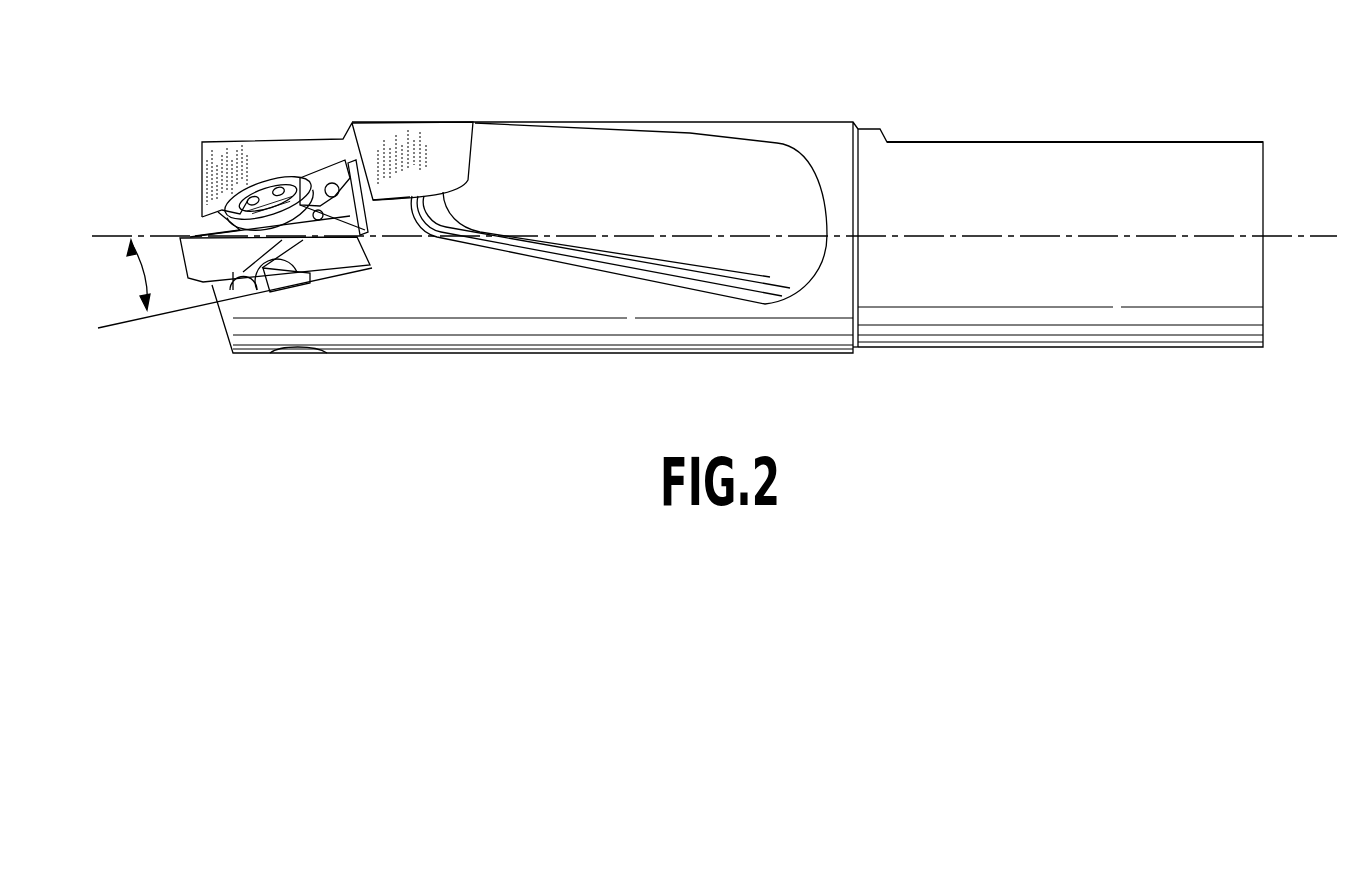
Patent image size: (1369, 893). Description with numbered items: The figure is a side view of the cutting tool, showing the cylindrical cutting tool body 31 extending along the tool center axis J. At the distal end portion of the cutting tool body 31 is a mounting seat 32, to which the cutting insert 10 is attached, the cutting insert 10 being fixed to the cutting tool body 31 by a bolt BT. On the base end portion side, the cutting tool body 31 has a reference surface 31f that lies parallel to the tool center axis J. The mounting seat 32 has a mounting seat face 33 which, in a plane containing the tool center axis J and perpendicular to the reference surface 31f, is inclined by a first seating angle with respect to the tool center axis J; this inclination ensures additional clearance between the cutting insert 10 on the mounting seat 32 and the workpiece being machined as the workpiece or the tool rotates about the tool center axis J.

The cutting insert 10 is at (213, 260).
The cutting tool body 31 is at (962, 348).
The reference surface 31f is at (990, 140).
The mounting seat 32 is at (218, 150).
The mounting seat face 33 is at (267, 268).
The bolt BT is at (272, 185).
The tool center axis J is at (1295, 232).